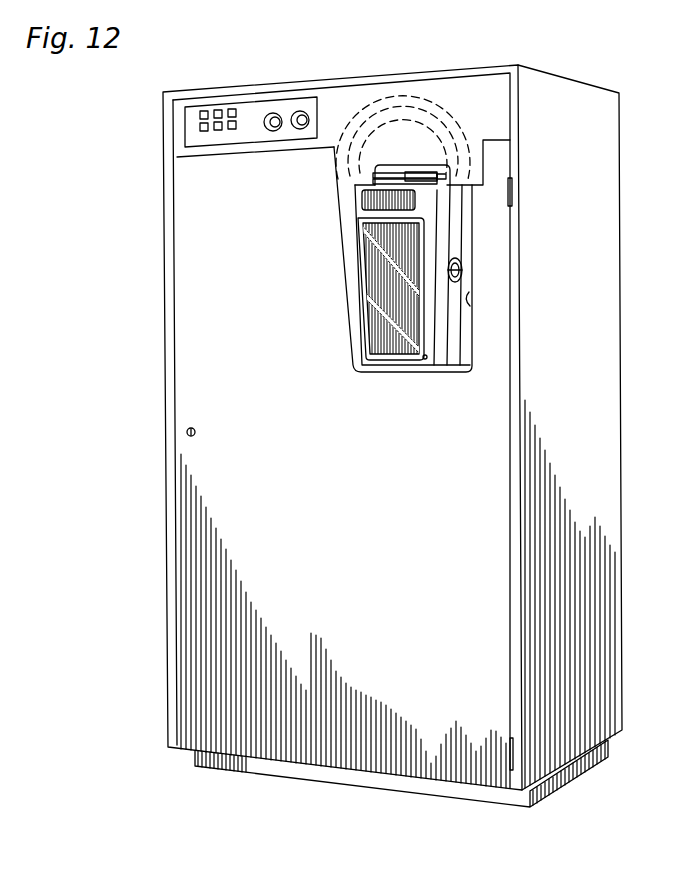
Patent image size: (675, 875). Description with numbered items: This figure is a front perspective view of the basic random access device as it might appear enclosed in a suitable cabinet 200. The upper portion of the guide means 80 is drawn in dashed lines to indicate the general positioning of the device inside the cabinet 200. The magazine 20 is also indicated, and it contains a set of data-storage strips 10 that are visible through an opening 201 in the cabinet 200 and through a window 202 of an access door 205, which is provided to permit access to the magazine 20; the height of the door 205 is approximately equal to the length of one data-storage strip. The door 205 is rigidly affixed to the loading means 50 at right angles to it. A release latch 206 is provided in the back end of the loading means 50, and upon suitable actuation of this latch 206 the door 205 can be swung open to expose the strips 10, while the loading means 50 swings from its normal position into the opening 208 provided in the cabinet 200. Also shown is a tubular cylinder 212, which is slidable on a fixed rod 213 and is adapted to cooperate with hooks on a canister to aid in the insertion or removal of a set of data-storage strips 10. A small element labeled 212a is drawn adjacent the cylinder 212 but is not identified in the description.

The cabinet 200 is at (166, 496).
The magazine 20 is at (351, 331).
The data-storage strips 10 is at (377, 293).
The window 202 is at (361, 252).
The opening 201 is at (362, 200).
The access door 205 is at (440, 221).
The release latch 206 is at (462, 272).
The opening 208 is at (475, 303).
The loading means 50 is at (446, 343).
The guide means 80 is at (443, 109).
The tubular cylinder 212 is at (416, 174).
The latch 212a is at (445, 177).
The fixed rod 213 is at (388, 172).